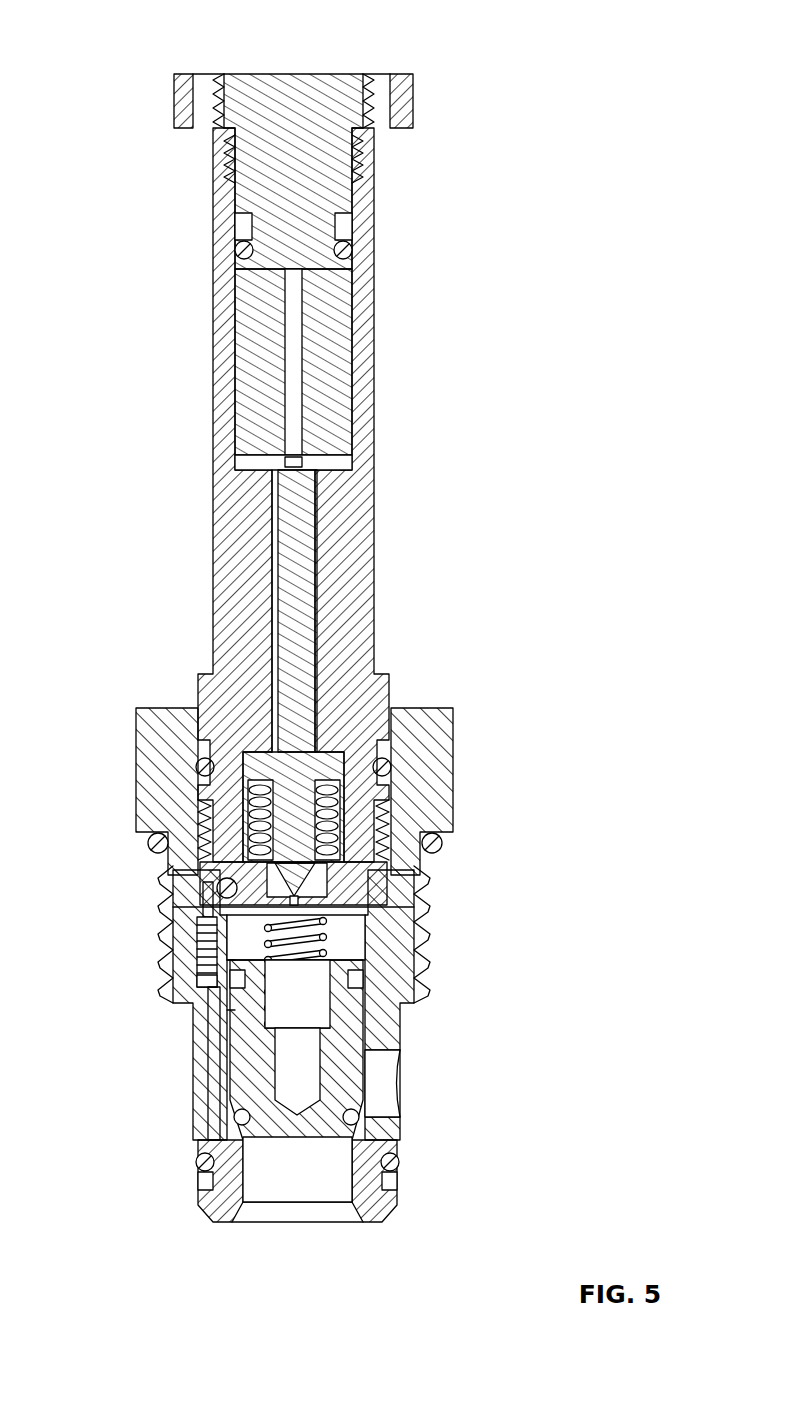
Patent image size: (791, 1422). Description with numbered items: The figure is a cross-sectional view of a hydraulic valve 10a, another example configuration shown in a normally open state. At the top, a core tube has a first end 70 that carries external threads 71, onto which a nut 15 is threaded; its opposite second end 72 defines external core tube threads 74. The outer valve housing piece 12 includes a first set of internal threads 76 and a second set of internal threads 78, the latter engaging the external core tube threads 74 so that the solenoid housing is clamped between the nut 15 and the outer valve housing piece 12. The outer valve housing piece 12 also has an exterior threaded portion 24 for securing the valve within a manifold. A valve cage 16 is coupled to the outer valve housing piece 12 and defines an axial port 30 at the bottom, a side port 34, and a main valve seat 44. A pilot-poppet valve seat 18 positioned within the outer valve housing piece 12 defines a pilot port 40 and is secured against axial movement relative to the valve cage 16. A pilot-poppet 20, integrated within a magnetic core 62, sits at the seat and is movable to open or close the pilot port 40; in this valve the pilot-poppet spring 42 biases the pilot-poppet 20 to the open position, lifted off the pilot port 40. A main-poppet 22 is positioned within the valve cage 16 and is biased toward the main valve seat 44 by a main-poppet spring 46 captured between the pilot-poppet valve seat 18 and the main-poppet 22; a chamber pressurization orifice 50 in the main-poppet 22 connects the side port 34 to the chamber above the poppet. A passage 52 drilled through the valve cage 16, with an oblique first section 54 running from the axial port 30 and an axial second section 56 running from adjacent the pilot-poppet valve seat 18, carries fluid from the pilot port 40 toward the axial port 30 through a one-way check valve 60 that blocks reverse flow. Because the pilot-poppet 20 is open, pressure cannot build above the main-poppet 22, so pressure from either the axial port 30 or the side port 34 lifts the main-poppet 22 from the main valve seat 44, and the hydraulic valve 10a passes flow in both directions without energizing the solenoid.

The hydraulic valve 10a is at (546, 178).
The outer valve housing piece 12 is at (440, 710).
The nut 15 is at (413, 110).
The valve cage 16 is at (406, 1141).
The pilot-poppet valve seat 18 is at (365, 878).
The pilot-poppet 20 is at (298, 770).
The main-poppet 22 is at (380, 1082).
The exterior threaded portion 24 is at (157, 866).
The axial port 30 is at (290, 1233).
The side port 34 is at (412, 1092).
The pilot port 40 is at (330, 902).
The pilot-poppet spring 42 is at (330, 780).
The main valve seat 44 is at (290, 1118).
The main-poppet spring 46 is at (385, 940).
The chamber pressurization orifice 50 is at (373, 1180).
The passage 52 is at (203, 1100).
The first section 54 is at (205, 1152).
The second section 56 is at (215, 1092).
The one-way check valve 60 is at (215, 878).
The magnetic core 62 is at (352, 488).
The first end 70 is at (221, 69).
The external threads 71 is at (210, 96).
The second end 72 is at (190, 868).
The external core tube threads 74 is at (203, 790).
The first set of internal threads 76 is at (230, 1010).
The second set of internal threads 78 is at (390, 850).